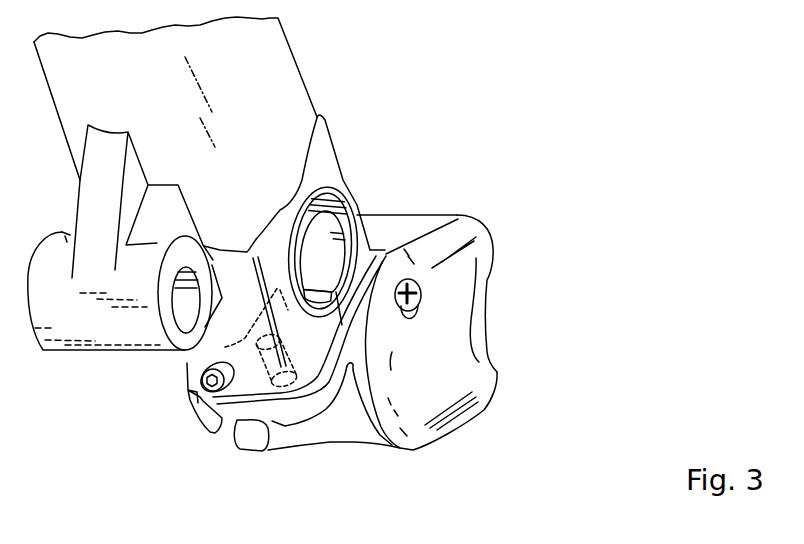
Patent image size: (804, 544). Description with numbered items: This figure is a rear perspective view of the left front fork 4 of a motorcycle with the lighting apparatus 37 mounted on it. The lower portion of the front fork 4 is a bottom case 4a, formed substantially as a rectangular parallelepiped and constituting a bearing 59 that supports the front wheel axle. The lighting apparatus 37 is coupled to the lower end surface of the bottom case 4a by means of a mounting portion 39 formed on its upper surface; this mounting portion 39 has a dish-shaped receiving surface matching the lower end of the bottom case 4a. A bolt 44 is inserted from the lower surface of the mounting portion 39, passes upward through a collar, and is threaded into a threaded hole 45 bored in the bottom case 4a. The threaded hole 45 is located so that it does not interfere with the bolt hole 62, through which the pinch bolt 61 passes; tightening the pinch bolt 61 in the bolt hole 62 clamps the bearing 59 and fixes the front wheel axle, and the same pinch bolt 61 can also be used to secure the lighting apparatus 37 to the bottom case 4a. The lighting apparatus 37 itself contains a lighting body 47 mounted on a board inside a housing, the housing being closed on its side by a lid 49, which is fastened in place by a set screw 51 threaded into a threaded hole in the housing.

The front fork 4 is at (272, 62).
The bottom case 4a is at (325, 160).
The bearing 59 is at (330, 195).
The lighting apparatus 37 is at (452, 200).
The set screw 51 is at (418, 301).
The lighting body 47 is at (482, 320).
The lid 49 is at (430, 400).
The bolt 44 is at (316, 415).
The mounting portion 39 is at (258, 415).
The threaded hole 45 is at (252, 360).
The bolt hole 62 is at (180, 368).
The pinch bolt 61 is at (185, 388).